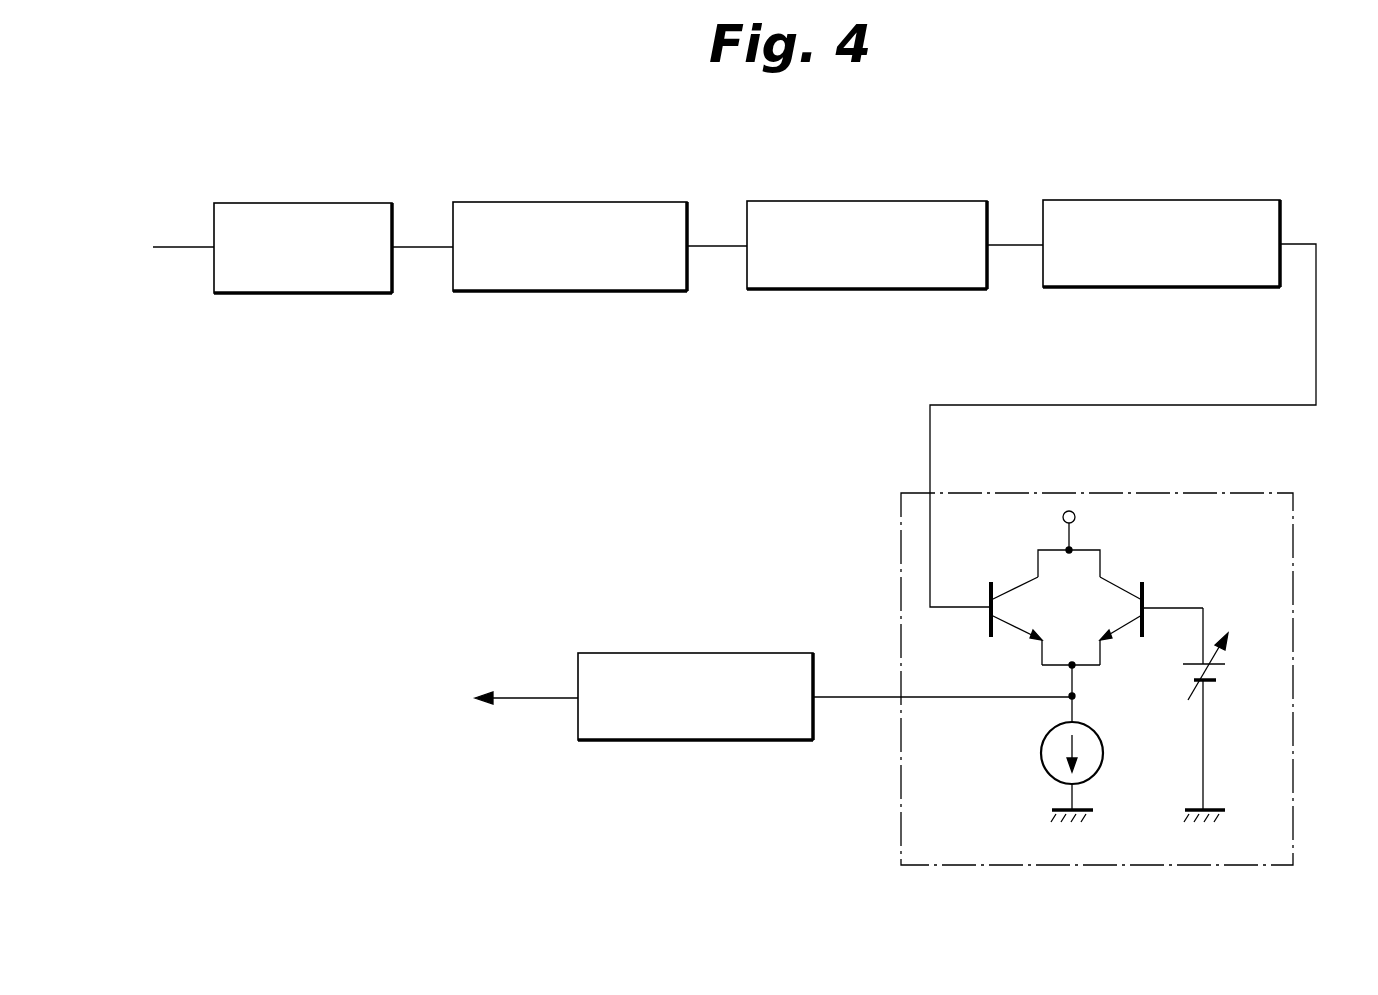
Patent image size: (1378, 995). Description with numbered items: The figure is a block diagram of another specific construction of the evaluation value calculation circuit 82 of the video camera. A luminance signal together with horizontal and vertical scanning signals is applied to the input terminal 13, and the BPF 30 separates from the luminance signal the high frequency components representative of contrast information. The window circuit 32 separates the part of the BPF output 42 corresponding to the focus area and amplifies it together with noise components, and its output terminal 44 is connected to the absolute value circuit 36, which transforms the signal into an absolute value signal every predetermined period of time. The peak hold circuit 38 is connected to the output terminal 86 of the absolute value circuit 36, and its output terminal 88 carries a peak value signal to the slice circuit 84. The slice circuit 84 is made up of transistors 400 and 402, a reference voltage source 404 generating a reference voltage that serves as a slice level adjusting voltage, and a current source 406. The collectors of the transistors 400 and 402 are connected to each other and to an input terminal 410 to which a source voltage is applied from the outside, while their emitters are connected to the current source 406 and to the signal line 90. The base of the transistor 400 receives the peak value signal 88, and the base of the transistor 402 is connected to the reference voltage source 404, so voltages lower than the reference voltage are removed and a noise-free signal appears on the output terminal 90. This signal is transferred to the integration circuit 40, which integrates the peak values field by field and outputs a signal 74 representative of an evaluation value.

The input terminal 13 is at (173, 247).
The BPF 30 is at (292, 203).
The BPF output 42 is at (419, 246).
The window circuit 32 is at (578, 202).
The output terminal 44 is at (716, 245).
The absolute value circuit 36 is at (853, 201).
The output terminal 86 is at (1010, 245).
The peak hold circuit 38 is at (1167, 200).
The output terminal 88 is at (1303, 244).
The slice circuit 84 is at (1235, 493).
The evaluation value calculation circuit 82 is at (550, 521).
The input terminal 410 is at (1080, 517).
The transistor 400 is at (986, 592).
The transistor 402 is at (1148, 596).
The reference voltage source 404 is at (1230, 649).
The current source 406 is at (1102, 732).
The integration circuit 40 is at (680, 652).
The signal 74 is at (522, 697).
The output terminal 90 is at (857, 697).